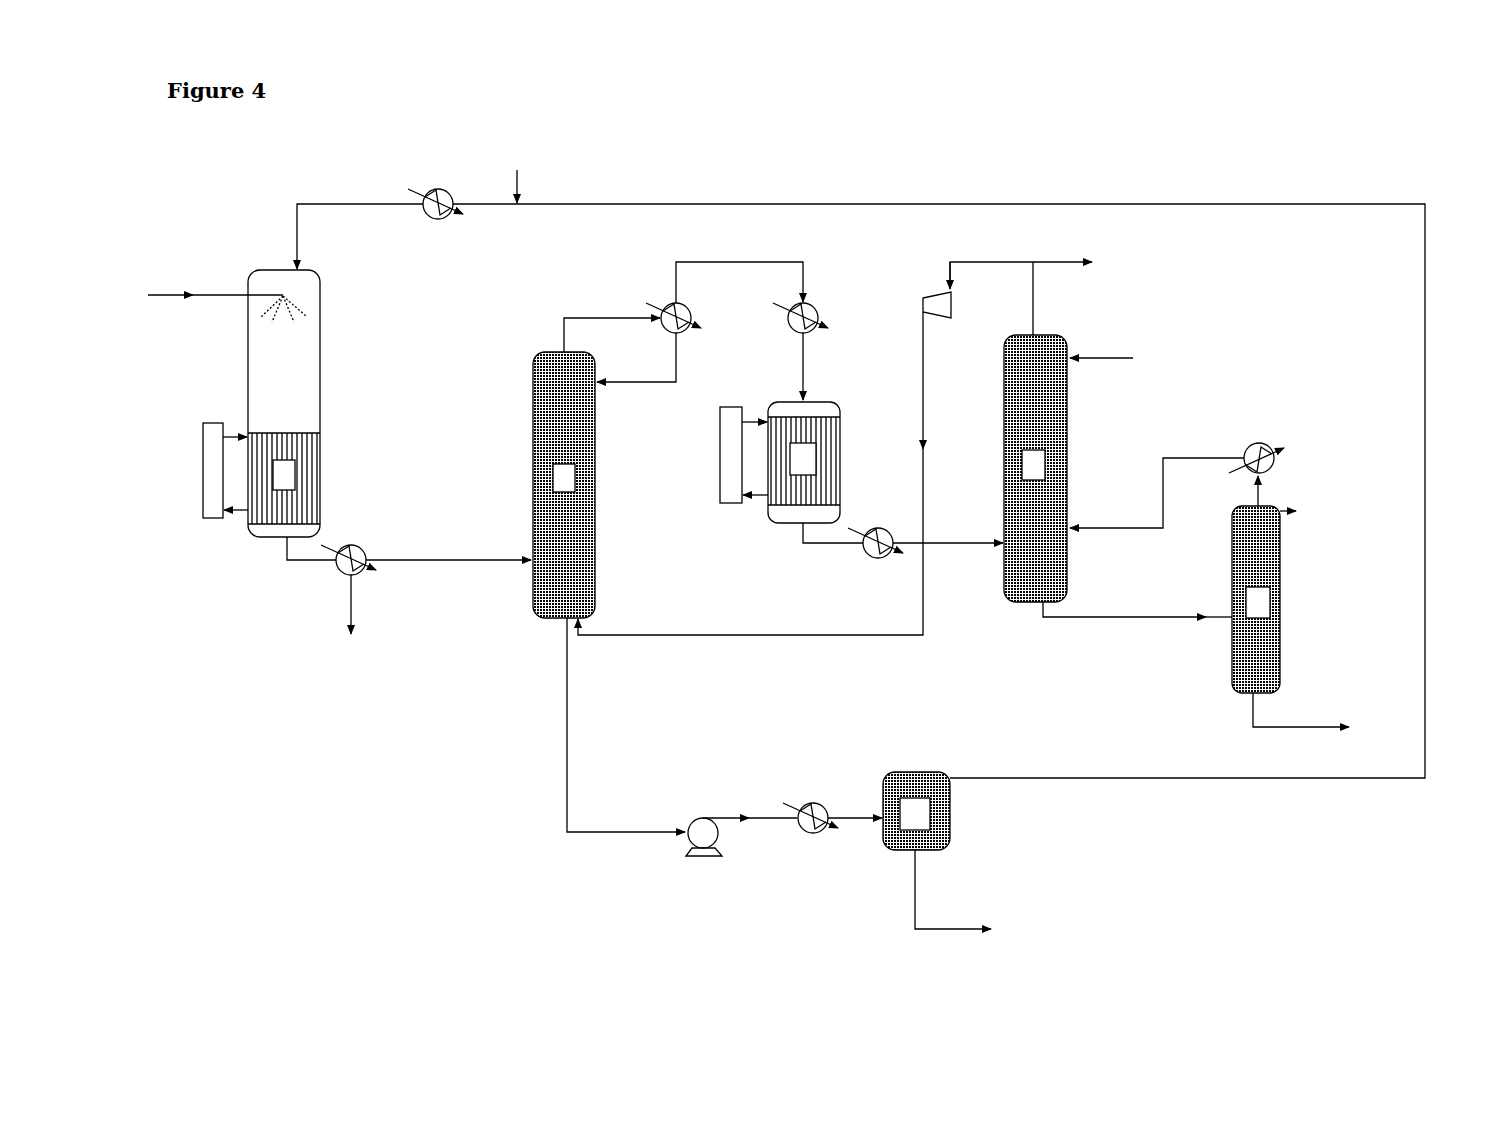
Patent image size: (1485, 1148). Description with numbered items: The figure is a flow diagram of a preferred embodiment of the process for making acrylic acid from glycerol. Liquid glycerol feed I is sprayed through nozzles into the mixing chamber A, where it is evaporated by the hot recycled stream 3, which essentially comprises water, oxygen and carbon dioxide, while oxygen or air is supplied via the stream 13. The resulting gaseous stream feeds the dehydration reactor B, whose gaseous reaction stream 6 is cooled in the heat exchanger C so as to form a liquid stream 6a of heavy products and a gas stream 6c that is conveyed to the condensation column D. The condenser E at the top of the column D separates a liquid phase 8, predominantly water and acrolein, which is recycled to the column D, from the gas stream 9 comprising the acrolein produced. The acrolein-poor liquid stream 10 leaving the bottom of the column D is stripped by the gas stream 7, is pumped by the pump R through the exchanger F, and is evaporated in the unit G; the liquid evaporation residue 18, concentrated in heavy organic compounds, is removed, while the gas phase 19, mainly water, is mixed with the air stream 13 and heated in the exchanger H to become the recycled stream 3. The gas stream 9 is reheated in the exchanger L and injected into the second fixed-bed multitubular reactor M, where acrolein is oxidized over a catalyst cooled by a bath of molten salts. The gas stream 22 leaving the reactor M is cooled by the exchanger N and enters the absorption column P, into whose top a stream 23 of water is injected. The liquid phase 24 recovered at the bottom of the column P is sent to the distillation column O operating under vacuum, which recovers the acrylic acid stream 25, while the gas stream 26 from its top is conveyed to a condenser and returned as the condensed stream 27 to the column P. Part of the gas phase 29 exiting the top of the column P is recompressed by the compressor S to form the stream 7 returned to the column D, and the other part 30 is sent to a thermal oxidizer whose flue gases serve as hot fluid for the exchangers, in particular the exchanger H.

The recycled stream 3 is at (360, 236).
The gaseous reaction stream 6 is at (307, 564).
The liquid stream of heavy products 6a is at (364, 624).
The gas stream 6c is at (448, 548).
The gas stream 7 is at (750, 473).
The liquid phase 8 is at (636, 357).
The gas stream comprising the acrolein produced 9 is at (739, 268).
The liquid stream 10 is at (609, 725).
The stream of air 13 is at (514, 176).
The liquid evaporation residue 18 is at (972, 895).
The gas phase 19 is at (939, 491).
The gas stream 22 is at (830, 547).
The stream of water 23 is at (1115, 359).
The liquid phase 24 is at (1137, 604).
The stream of acrylic acid 25 is at (1318, 716).
The gas stream 26 is at (1280, 497).
The column O overhead condensed return stream to P 27 is at (1177, 482).
The gas phase 29 is at (1018, 298).
The other part of the gas phase 30 is at (1036, 262).
The mixing chamber A is at (234, 403).
The dehydration reactor B is at (261, 473).
The heat exchanger C is at (348, 546).
The condensation column D is at (564, 485).
The condenser E is at (640, 327).
The exchanger F is at (832, 805).
The unit G is at (916, 811).
The exchanger H is at (435, 221).
The glycerol stream I is at (135, 294).
The exchanger L is at (811, 351).
The second fixed-bed multitubular reactor M is at (780, 462).
The exchanger N is at (925, 559).
The distillation column O is at (1256, 584).
The absorption column P is at (1035, 468).
The pump R is at (741, 826).
The compressor S is at (924, 290).